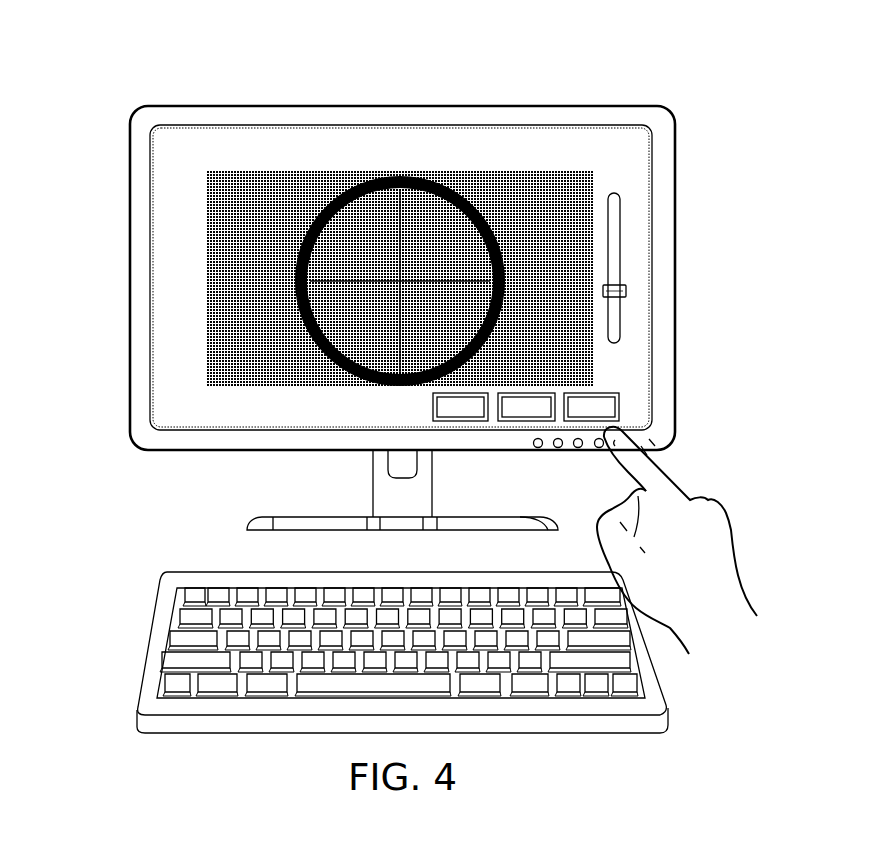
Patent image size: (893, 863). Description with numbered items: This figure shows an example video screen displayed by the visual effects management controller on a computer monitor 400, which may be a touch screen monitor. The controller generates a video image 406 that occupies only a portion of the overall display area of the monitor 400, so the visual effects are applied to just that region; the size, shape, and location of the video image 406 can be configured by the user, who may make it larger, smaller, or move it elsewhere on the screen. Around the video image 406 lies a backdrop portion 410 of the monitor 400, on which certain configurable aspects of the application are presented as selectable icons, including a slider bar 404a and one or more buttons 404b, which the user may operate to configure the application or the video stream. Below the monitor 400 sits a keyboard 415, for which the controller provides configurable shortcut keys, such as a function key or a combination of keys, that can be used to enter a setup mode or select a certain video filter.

The monitor 400 is at (243, 66).
The slider bar 404a is at (620, 262).
The buttons 404b is at (426, 405).
The video image 406 is at (205, 280).
The backdrop portion 410 is at (166, 315).
The keyboard 415 is at (151, 645).